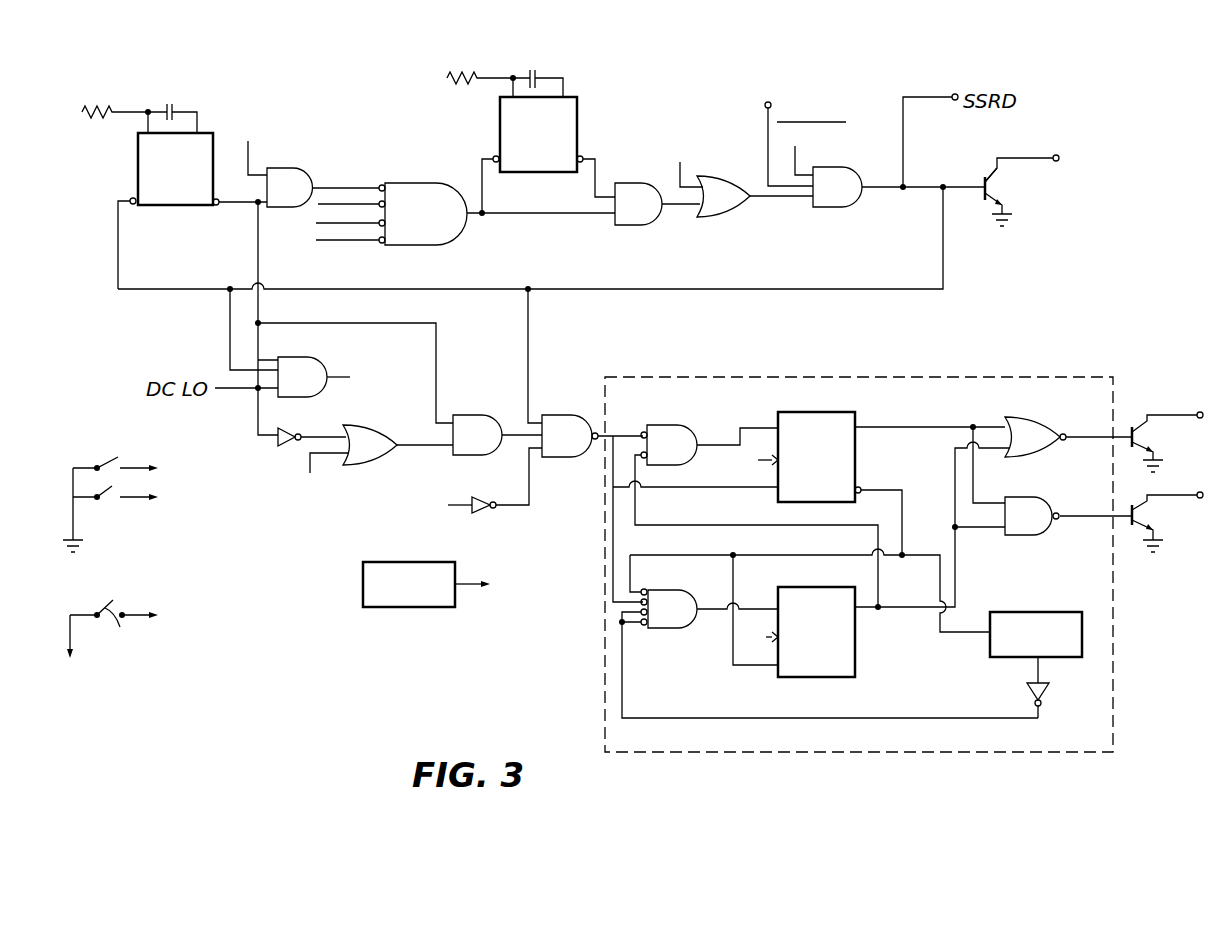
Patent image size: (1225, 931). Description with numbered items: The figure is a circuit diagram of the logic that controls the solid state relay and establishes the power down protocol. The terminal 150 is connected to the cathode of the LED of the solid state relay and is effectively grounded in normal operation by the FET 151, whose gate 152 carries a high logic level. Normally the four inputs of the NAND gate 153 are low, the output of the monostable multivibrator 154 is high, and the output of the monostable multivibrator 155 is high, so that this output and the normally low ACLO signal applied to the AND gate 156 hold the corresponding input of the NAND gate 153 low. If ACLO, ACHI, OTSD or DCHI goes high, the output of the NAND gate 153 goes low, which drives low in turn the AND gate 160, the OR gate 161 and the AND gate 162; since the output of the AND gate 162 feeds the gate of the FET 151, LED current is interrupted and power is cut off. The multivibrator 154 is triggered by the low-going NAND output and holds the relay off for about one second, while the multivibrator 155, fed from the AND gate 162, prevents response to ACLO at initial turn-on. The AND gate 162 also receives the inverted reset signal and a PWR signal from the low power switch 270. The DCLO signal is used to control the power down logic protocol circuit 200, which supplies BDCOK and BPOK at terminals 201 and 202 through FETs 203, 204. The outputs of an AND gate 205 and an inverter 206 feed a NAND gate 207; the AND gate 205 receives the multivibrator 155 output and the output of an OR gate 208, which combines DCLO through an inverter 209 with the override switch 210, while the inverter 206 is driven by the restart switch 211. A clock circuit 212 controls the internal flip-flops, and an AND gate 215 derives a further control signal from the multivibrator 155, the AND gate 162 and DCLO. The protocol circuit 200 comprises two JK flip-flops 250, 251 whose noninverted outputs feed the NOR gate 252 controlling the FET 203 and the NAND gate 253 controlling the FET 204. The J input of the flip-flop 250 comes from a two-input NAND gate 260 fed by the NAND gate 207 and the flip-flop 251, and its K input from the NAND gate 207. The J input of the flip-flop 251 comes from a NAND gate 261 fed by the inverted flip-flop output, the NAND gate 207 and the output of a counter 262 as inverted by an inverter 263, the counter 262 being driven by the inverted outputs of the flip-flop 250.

The terminal 150 is at (1054, 166).
The FET 151 is at (990, 168).
The gate 152 is at (972, 184).
The NAND gate 153 is at (421, 237).
The monostable multivibrator 154 is at (562, 109).
The monostable multivibrator 155 is at (204, 140).
The AND gate 156 is at (286, 170).
The AND gate 160 is at (635, 225).
The OR gate 161 is at (720, 213).
The AND gate 162 is at (836, 207).
The power down logic protocol circuit 200 is at (982, 744).
The terminal 201 is at (1202, 420).
The terminal 202 is at (1202, 500).
The FET 203 is at (1127, 452).
The FET 204 is at (1125, 532).
The AND gate 205 is at (478, 453).
The inverter 206 is at (476, 509).
The NAND gate 207 is at (580, 406).
The OR gate 208 is at (362, 434).
The inverter 209 is at (293, 425).
The override switch 210 is at (144, 446).
The restart switch 211 is at (150, 510).
The clock circuit 212 is at (405, 608).
The AND gate 215 is at (306, 353).
The JK flip-flop 250 is at (845, 416).
The JK flip-flop 251 is at (838, 677).
The NOR gate 252 is at (1050, 406).
The NAND gate 253 is at (1047, 488).
The NAND gate 260 is at (682, 414).
The NAND gate 261 is at (672, 630).
The counter 262 is at (1083, 652).
The inverter 263 is at (1044, 693).
The low power switch 270 is at (138, 631).